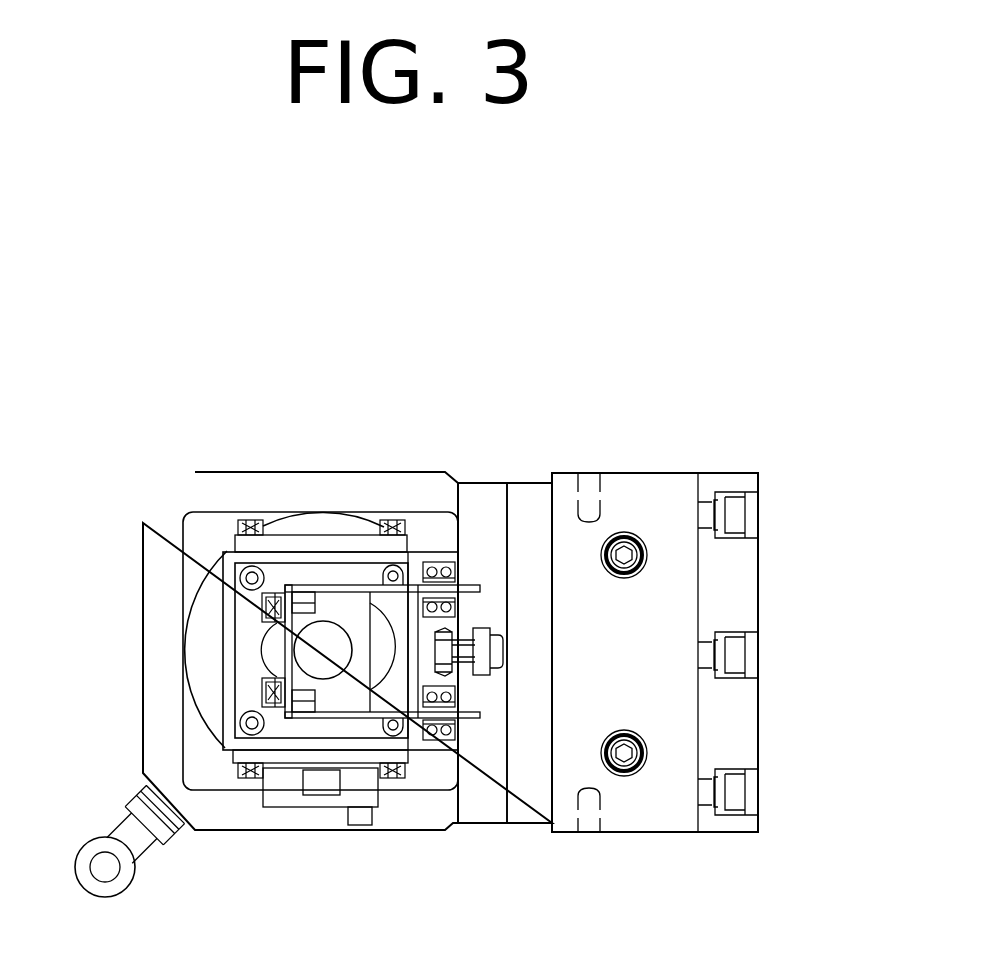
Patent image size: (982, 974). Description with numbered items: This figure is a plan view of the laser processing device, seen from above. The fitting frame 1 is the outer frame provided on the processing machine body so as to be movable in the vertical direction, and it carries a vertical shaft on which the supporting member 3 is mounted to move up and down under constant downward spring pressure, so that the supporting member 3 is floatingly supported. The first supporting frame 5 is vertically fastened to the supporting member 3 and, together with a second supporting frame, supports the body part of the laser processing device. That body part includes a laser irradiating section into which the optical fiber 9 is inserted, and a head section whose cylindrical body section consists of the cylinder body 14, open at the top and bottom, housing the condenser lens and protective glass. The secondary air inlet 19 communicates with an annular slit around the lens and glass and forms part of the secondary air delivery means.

The fitting frame 1 is at (736, 592).
The supporting member 3 is at (522, 520).
The first supporting frame 5 is at (478, 520).
The optical fiber 9 is at (320, 653).
The cylinder body 14 is at (318, 820).
The secondary air inlet 19 is at (107, 866).